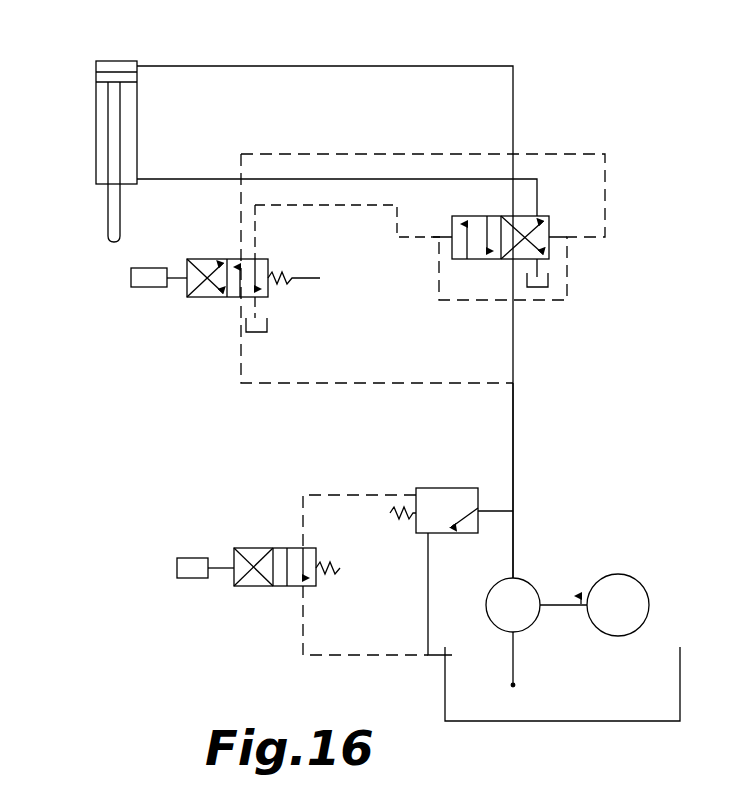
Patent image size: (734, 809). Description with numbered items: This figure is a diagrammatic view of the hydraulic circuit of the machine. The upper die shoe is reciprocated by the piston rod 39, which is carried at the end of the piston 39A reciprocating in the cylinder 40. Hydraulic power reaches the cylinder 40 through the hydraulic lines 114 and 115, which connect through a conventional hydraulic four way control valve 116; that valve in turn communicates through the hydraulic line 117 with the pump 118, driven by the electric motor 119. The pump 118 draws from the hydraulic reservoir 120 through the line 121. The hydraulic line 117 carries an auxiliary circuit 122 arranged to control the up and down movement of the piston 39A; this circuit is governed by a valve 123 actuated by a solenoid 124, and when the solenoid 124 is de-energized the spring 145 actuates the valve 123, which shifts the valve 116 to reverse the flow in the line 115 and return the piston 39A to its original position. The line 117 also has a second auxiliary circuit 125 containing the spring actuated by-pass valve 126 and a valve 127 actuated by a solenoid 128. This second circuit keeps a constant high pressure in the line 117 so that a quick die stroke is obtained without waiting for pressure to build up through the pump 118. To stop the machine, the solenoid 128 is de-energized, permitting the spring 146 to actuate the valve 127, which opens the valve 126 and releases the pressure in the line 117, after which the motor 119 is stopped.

The piston rod 39 is at (120, 209).
The piston 39A is at (96, 73).
The cylinder 40 is at (96, 99).
The hydraulic line 114 is at (243, 66).
The hydraulic line 115 is at (157, 178).
The hydraulic four way control valve 116 is at (547, 215).
The hydraulic line 117 is at (514, 427).
The pump 118 is at (486, 600).
The electric motor 119 is at (617, 576).
The hydraulic reservoir 120 is at (445, 682).
The line 121 is at (515, 647).
The auxiliary circuit 122 is at (372, 383).
The valve 123 is at (262, 258).
The solenoid 124 is at (131, 280).
The second auxiliary circuit 125 is at (368, 492).
The spring actuated by-pass valve 126 is at (450, 488).
The valve 127 is at (255, 588).
The solenoid 128 is at (177, 565).
The spring 145 is at (313, 283).
The spring 146 is at (340, 565).